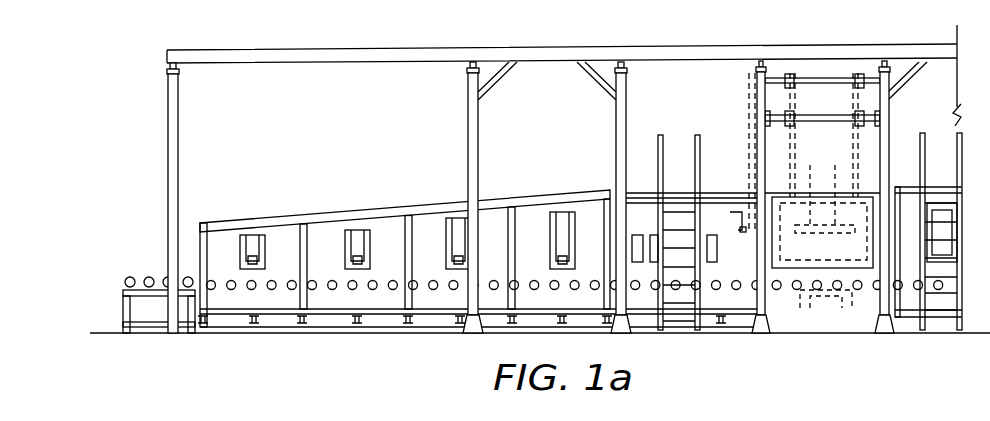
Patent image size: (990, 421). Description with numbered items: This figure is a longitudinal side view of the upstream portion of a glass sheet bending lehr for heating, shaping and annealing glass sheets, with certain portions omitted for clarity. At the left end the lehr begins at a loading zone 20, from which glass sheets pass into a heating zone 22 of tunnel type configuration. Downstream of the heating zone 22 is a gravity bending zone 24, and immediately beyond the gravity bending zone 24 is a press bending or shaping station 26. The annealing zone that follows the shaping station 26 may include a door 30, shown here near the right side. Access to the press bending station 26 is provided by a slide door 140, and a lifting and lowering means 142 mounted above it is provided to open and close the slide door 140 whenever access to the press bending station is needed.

The loading zone 20 is at (138, 229).
The heating zone 22 is at (360, 155).
The gravity bending zone 24 is at (692, 103).
The press bending station 26 is at (832, 18).
The door 30 is at (895, 248).
The slide door 140 is at (772, 250).
The lifting and lowering means 142 is at (814, 86).